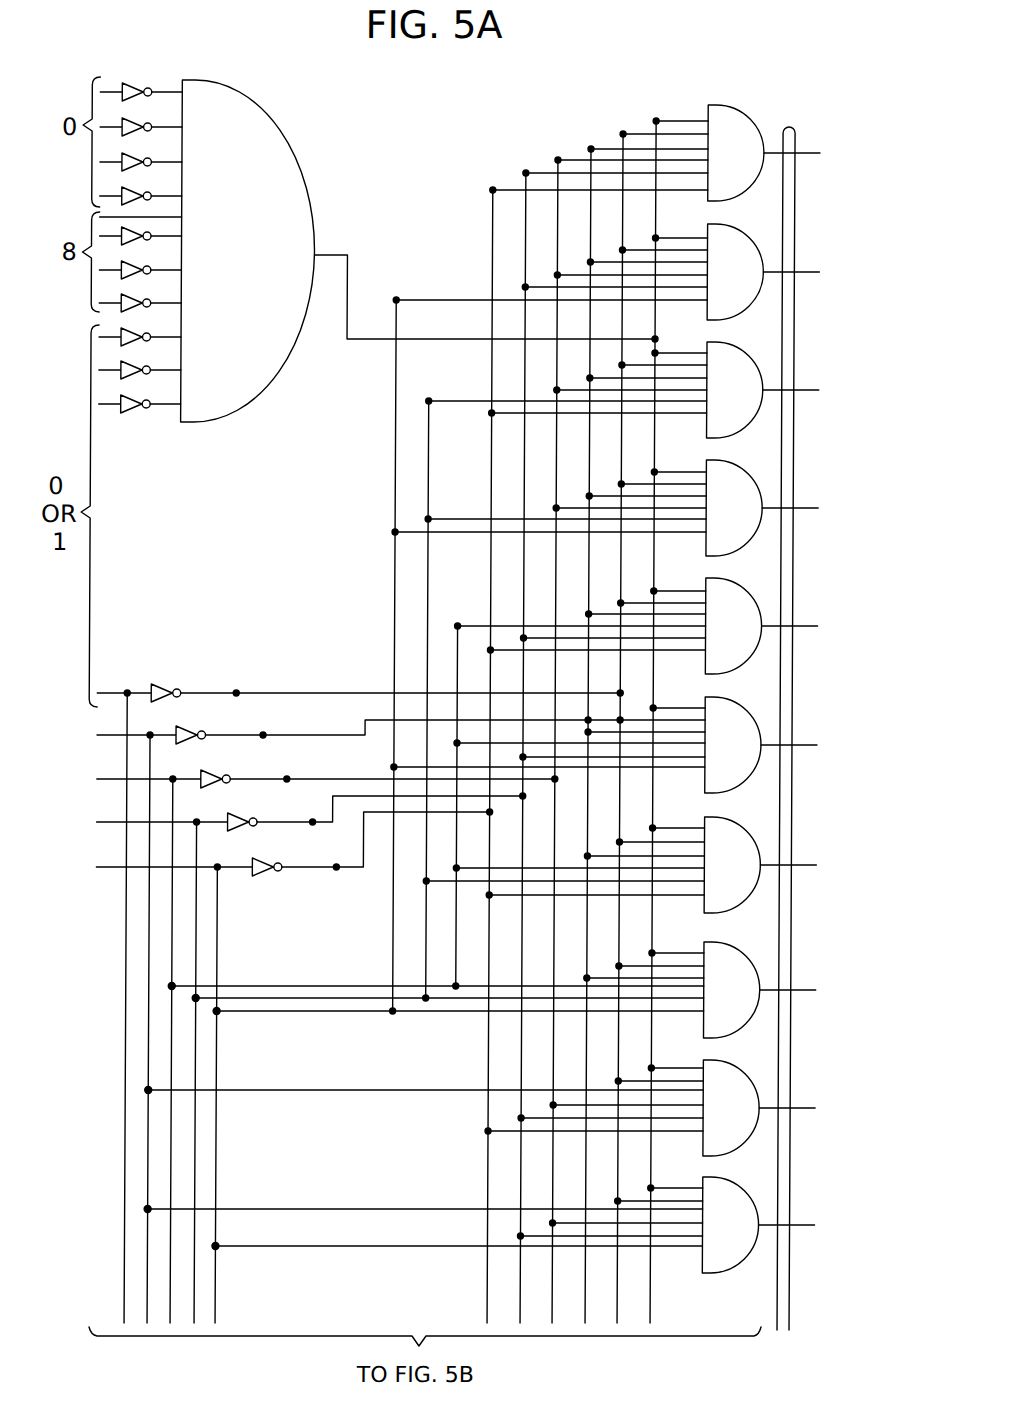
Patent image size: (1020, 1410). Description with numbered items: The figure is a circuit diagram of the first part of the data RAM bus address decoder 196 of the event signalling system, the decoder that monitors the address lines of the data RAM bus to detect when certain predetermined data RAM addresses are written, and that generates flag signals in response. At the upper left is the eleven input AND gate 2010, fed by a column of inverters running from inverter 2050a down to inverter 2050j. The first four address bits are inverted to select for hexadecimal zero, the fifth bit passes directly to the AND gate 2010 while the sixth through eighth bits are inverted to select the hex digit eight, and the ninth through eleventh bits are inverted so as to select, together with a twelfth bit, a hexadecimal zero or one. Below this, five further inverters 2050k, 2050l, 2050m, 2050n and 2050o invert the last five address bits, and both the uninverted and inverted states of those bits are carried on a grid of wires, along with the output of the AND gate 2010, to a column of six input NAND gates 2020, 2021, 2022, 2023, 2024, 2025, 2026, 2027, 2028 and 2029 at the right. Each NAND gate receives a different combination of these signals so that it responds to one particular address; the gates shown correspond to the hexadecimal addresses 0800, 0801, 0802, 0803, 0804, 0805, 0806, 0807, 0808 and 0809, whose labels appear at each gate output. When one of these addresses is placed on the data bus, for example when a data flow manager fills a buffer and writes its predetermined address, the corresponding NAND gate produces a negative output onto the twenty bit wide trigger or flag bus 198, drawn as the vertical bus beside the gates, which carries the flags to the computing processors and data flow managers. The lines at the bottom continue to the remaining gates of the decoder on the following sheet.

The eleven input AND gate 2010 is at (262, 267).
The inverter 2050a is at (130, 81).
The inverter 2050j is at (133, 417).
The inverter 2050k is at (160, 680).
The inverter 2050l is at (187, 727).
The inverter 2050m is at (218, 771).
The inverter 2050n is at (258, 808).
The inverter 2050o is at (260, 875).
The data RAM bus address decoder 196 is at (370, 566).
The flag bus 198 is at (795, 200).
The six input NAND gate 2020 is at (753, 118).
The six input NAND gate 2021 is at (753, 248).
The six input NAND gate 2022 is at (753, 364).
The six input NAND gate 2023 is at (753, 482).
The six input NAND gate 2024 is at (753, 600).
The six input NAND gate 2025 is at (753, 720).
The six input NAND gate 2026 is at (753, 840).
The six input NAND gate 2027 is at (753, 966).
The six input NAND gate 2028 is at (753, 1084).
The six input NAND gate 2029 is at (753, 1201).
The data RAM address 0800 is at (824, 154).
The data RAM address 0801 is at (823, 273).
The data RAM address 0802 is at (823, 391).
The data RAM address 0803 is at (822, 509).
The data RAM address 0804 is at (822, 627).
The data RAM address 0805 is at (821, 746).
The data RAM address 0806 is at (820, 866).
The data RAM address 0807 is at (820, 991).
The data RAM address 0808 is at (819, 1109).
The data RAM address 0809 is at (818, 1226).